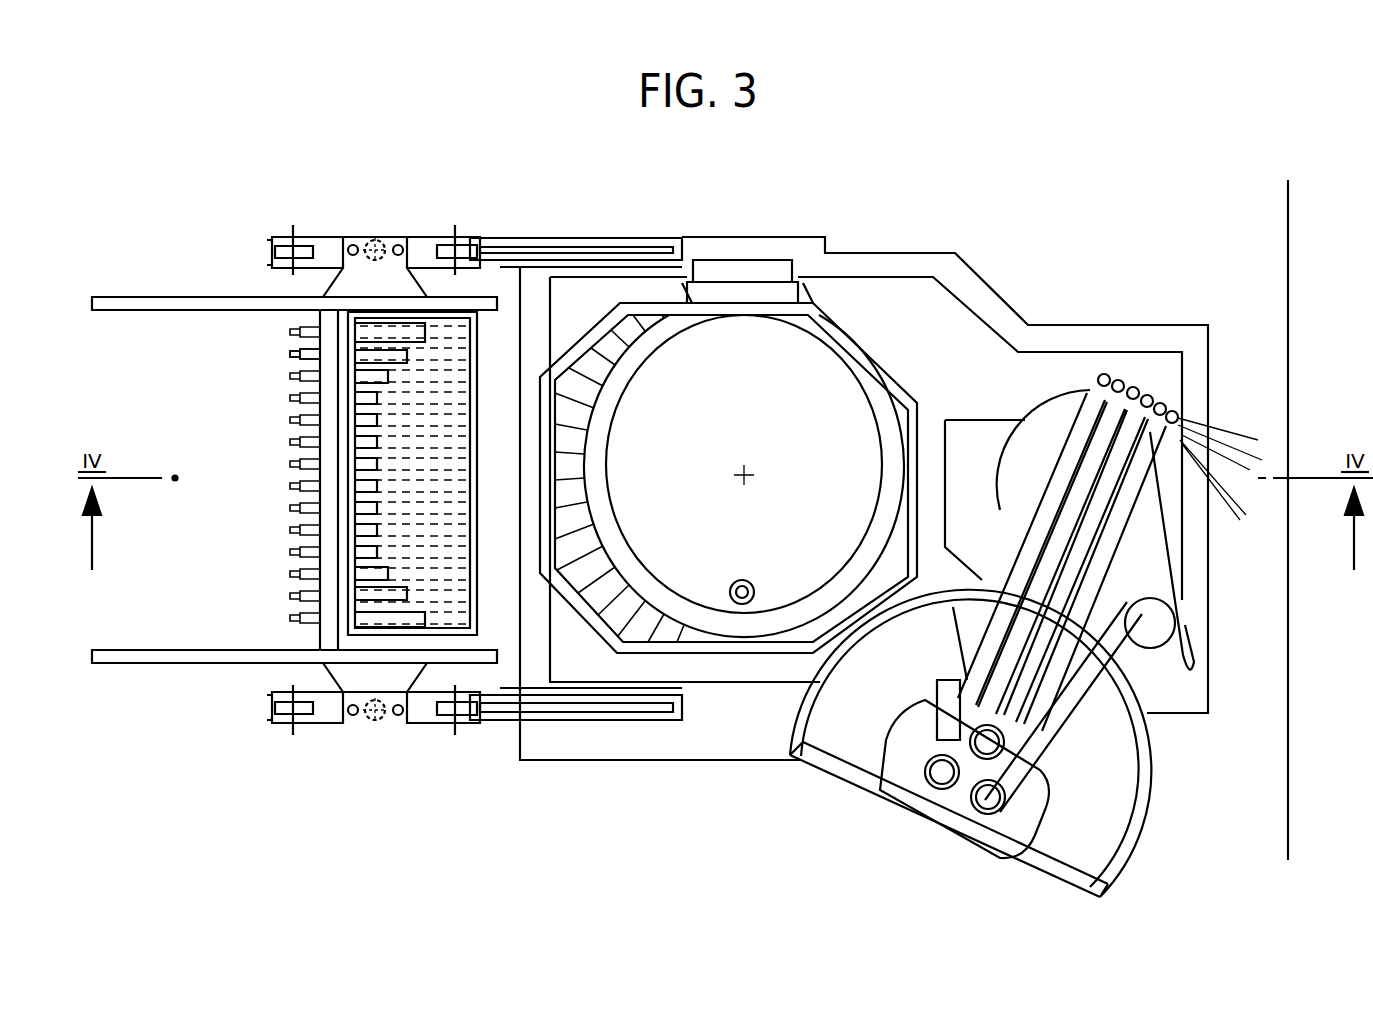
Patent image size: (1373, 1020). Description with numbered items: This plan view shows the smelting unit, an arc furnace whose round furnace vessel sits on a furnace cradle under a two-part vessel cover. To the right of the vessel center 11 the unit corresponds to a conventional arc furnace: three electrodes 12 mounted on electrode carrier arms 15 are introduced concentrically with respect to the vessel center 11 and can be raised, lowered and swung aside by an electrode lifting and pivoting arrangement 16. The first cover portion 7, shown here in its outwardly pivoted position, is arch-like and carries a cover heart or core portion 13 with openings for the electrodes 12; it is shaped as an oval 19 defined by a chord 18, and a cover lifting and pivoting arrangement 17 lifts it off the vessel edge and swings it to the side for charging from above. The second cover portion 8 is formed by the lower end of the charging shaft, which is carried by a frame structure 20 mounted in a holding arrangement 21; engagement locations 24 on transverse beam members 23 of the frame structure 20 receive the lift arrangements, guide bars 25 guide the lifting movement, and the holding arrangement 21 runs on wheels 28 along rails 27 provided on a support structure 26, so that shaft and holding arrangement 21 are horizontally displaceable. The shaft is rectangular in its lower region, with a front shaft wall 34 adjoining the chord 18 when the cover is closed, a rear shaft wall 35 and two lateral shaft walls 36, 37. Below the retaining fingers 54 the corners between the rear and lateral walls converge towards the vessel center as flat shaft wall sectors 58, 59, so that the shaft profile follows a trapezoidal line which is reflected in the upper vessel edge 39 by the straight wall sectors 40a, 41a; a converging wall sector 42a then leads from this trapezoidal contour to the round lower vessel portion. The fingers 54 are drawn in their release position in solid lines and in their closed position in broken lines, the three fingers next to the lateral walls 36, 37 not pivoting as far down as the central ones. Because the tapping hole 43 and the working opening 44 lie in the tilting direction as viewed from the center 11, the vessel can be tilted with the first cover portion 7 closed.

The first cover portion 7 is at (1046, 820).
The second cover portion 8 is at (292, 556).
The vessel center 11 is at (745, 475).
The electrodes 12 is at (942, 777).
The cover heart or core portion 13 is at (993, 827).
The electrode carrier arms 15 is at (1117, 542).
The electrode lifting and pivoting arrangement 16 is at (1062, 448).
The cover lifting and pivoting arrangement 17 is at (1160, 613).
The chord 18 is at (813, 773).
The oval 19 is at (1143, 795).
The frame structure 20 is at (323, 342).
The holding arrangement 21 is at (318, 258).
The transverse beam members 23 is at (483, 262).
The engagement locations 24 is at (397, 200).
The guide bars 25 is at (353, 246).
The support structure 26 is at (657, 248).
The rails 27 is at (548, 250).
The wheels 28 is at (286, 247).
The front shaft wall 34 is at (475, 570).
The rear shaft wall 35 is at (350, 438).
The lateral shaft wall 36 is at (423, 633).
The lateral shaft wall 37 is at (427, 302).
The upper vessel edge 39 is at (887, 387).
The wall sector 40a is at (553, 467).
The wall sector 41a is at (602, 307).
The converging wall sector 42a is at (585, 388).
The tapping hole 43 is at (745, 583).
The working opening 44 is at (780, 270).
The fingers 54 is at (362, 490).
The converging shaft wall sector 58 is at (365, 607).
The converging shaft wall sector 59 is at (360, 330).